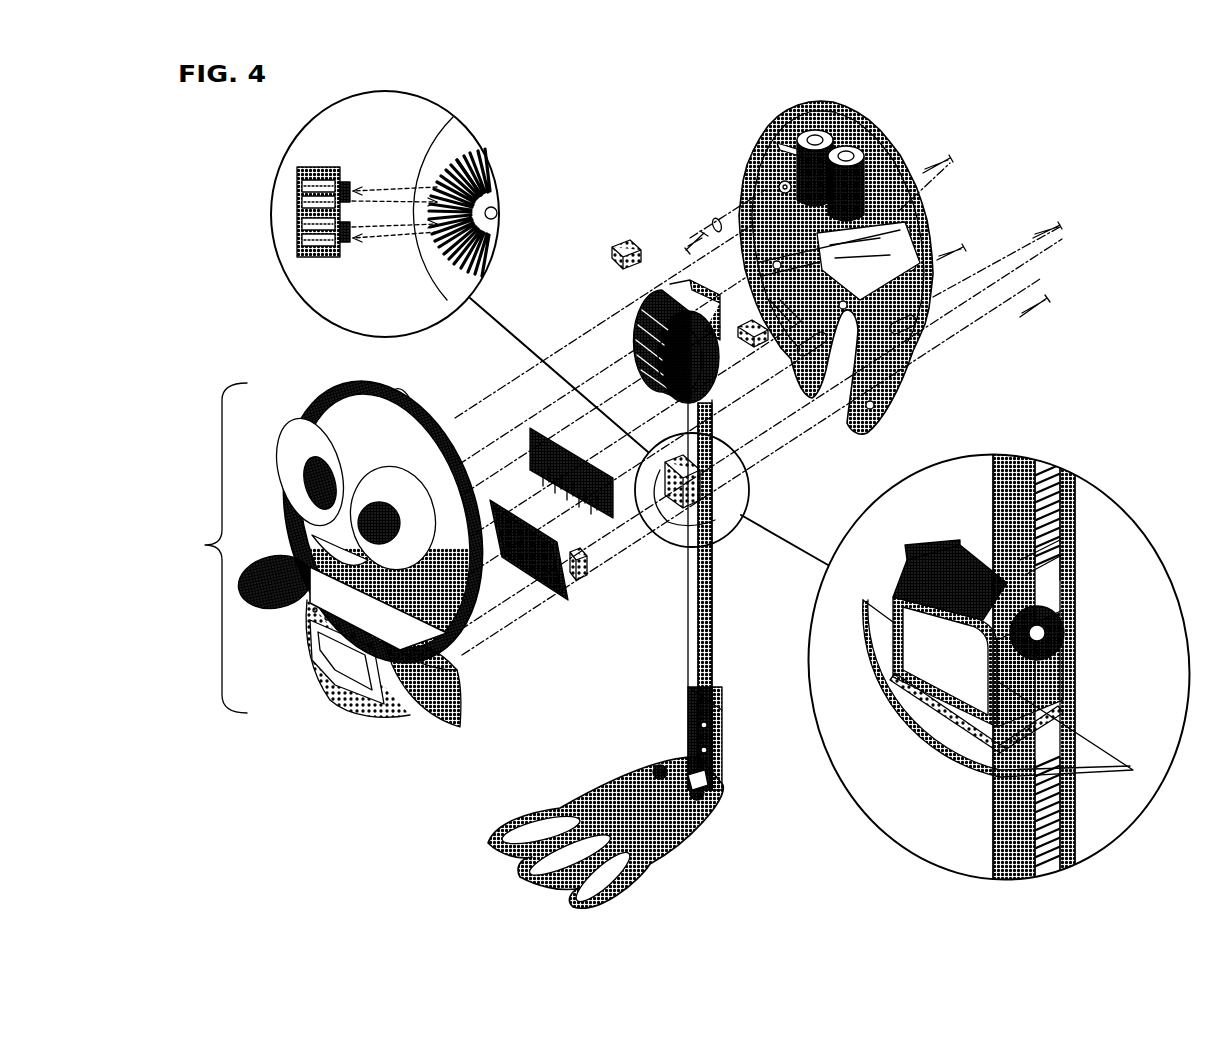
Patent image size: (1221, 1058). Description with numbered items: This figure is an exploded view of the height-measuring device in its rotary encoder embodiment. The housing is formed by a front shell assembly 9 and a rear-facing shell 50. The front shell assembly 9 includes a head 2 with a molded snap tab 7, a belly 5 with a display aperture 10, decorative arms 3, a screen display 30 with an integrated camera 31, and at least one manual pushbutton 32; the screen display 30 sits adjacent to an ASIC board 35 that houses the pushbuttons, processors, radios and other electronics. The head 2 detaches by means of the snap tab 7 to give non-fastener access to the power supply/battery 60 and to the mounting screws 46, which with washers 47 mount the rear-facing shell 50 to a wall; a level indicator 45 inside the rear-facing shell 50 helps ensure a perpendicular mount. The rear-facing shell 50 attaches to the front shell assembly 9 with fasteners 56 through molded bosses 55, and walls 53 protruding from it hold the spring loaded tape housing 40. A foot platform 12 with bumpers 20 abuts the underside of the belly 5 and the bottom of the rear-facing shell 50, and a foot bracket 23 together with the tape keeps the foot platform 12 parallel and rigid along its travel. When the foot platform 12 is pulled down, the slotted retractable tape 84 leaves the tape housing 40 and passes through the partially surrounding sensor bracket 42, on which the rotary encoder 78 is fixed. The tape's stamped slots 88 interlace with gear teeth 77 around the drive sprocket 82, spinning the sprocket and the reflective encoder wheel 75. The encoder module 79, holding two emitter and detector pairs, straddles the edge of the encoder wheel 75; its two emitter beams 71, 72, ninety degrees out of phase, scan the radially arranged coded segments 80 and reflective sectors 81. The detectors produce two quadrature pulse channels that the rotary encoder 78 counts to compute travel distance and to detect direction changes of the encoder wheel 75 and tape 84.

The head 2 is at (413, 450).
The decorative arms 3 is at (263, 570).
The belly 5 is at (400, 713).
The molded snap tab 7 is at (397, 391).
The front shell assembly 9 is at (215, 548).
The display aperture 10 is at (370, 690).
The foot platform 12 is at (577, 787).
The bumpers 20 is at (643, 760).
The foot bracket 23 is at (723, 722).
The screen display 30 is at (547, 598).
The integrated camera 31 is at (500, 560).
The manual pushbutton 32 is at (590, 517).
The ASIC board 35 is at (550, 430).
The spring loaded tape housing 40 is at (627, 347).
The sensor bracket 42 is at (927, 720).
The level indicator 45 is at (612, 250).
The mounting screws 46 is at (683, 245).
The washers 47 is at (712, 220).
The rear-facing shell 50 is at (867, 143).
The walls 53 is at (934, 310).
The molded bosses 55 is at (932, 330).
The fasteners 56 is at (1040, 298).
The power supply/battery 60 is at (775, 135).
The emitter beam 71 is at (400, 193).
The emitter beam 72 is at (400, 233).
The encoder wheel 75 is at (437, 293).
The gear teeth 77 is at (1050, 540).
The rotary encoder 78 is at (957, 560).
The encoder module 79 is at (313, 167).
The coded segments 80 is at (440, 127).
The reflective sectors 81 is at (443, 153).
The drive sprocket 82 is at (1067, 587).
The slotted retractable tape 84 is at (710, 647).
The stamped slots 88 is at (1030, 850).